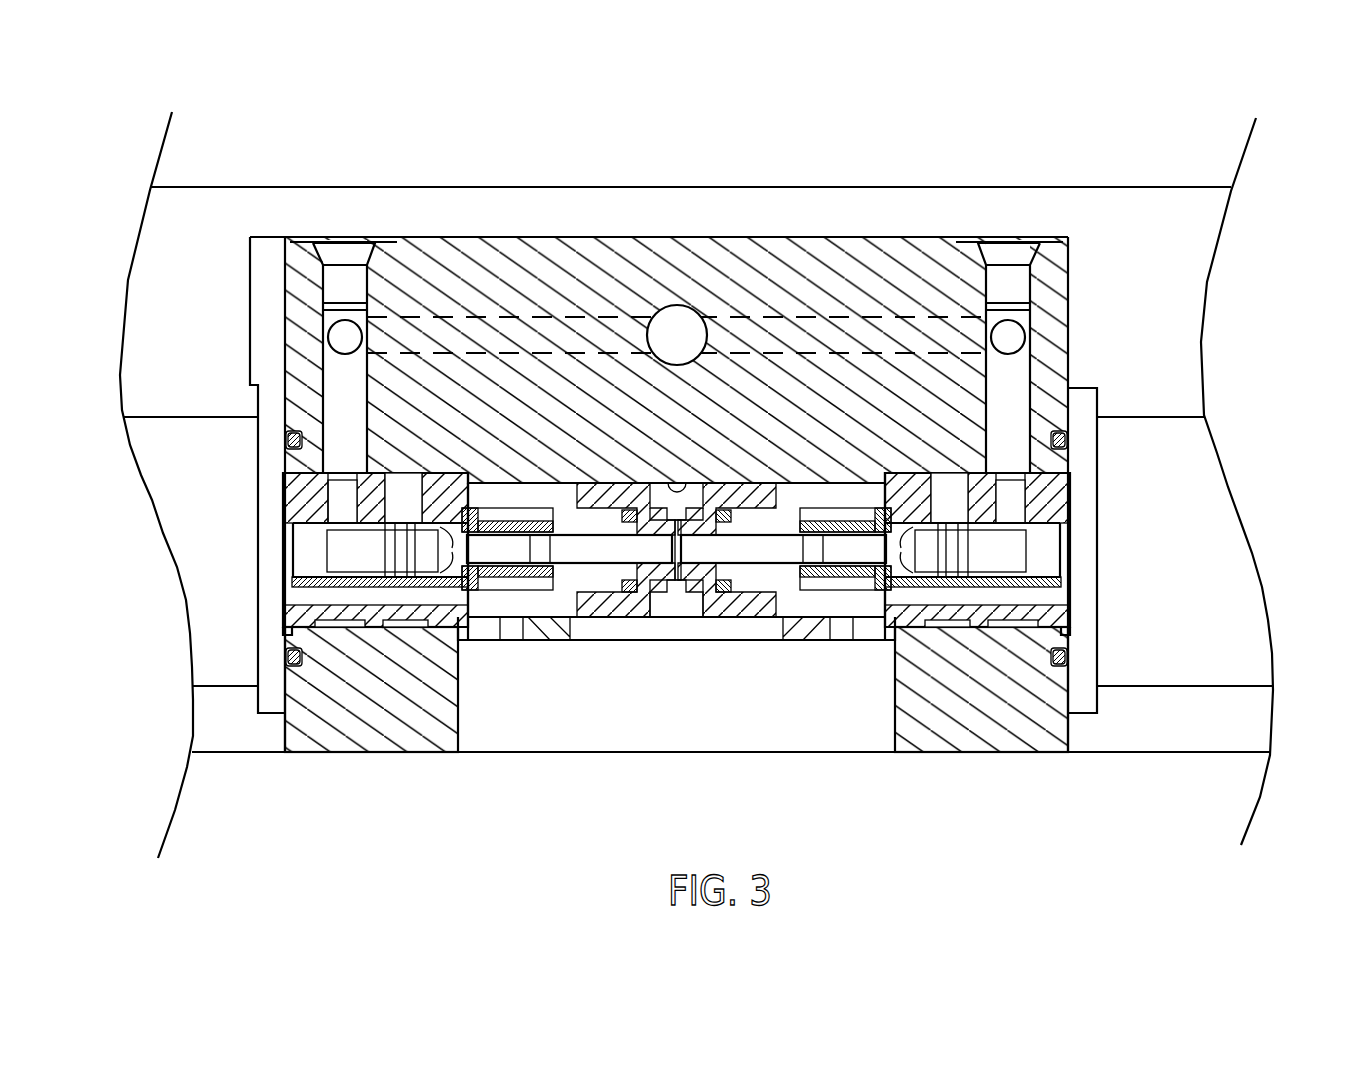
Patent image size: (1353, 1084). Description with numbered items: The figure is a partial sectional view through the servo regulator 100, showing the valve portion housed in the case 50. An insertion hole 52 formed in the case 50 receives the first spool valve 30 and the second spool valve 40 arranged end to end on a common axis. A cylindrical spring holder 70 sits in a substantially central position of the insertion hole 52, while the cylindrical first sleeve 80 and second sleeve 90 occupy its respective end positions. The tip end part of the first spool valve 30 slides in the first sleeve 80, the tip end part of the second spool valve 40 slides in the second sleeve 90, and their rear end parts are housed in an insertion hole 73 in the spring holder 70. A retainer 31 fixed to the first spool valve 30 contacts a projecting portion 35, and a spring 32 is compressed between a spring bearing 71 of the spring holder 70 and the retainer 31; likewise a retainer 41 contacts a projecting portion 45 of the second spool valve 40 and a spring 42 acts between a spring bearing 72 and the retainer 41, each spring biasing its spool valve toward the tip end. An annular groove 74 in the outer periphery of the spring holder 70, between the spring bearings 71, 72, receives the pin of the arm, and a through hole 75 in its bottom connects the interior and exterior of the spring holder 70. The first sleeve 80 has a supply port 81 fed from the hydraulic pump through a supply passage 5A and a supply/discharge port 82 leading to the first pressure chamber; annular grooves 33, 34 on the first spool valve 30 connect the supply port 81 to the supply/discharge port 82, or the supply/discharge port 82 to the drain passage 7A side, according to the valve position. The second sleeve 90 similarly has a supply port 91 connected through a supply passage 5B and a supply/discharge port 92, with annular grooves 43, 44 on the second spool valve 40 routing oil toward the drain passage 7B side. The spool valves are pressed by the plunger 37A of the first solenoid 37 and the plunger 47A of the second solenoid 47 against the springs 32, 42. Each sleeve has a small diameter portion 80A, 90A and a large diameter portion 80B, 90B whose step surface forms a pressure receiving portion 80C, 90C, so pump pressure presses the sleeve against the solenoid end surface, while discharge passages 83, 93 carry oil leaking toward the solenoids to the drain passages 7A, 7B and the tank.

The servo regulator 100 is at (1187, 148).
The case 50 is at (235, 212).
The second solenoid 47 is at (232, 668).
The plunger 47A is at (285, 550).
The first solenoid 37 is at (1176, 673).
The plunger 37A is at (1068, 550).
The supply passage 5A is at (1015, 372).
The supply passage 5B is at (340, 375).
The insertion hole 52 is at (655, 315).
The second sleeve 90 is at (278, 613).
The small diameter portion 90A is at (458, 478).
The large diameter portion 90B is at (302, 635).
The pressure receiving portion 90C is at (305, 478).
The supply port 91 is at (338, 497).
The supply/discharge port 92 is at (405, 495).
The discharge passage 93 is at (382, 592).
The annular groove 43 is at (350, 575).
The annular groove 44 is at (432, 570).
The projecting portion 45 is at (457, 572).
The first sleeve 80 is at (1076, 613).
The small diameter portion 80A is at (907, 478).
The large diameter portion 80B is at (1062, 635).
The pressure receiving portion 80C is at (1055, 466).
The supply port 81 is at (1015, 502).
The supply/discharge port 82 is at (952, 497).
The discharge passage 83 is at (970, 595).
The annular groove 33 is at (1012, 574).
The annular groove 34 is at (925, 574).
The projecting portion 35 is at (895, 578).
The spring holder 70 is at (622, 622).
The drain passage 7A is at (858, 630).
The drain passage 7B is at (493, 628).
The second spool valve 40 is at (573, 545).
The retainer 41 is at (513, 590).
The spring 42 is at (565, 590).
The first spool valve 30 is at (785, 550).
The retainer 31 is at (820, 590).
The spring 32 is at (742, 583).
The spring bearing 72 is at (597, 500).
The spring bearing 71 is at (752, 528).
The through hole 75 is at (678, 519).
The annular groove 74 is at (677, 600).
The insertion hole 73 is at (700, 560).